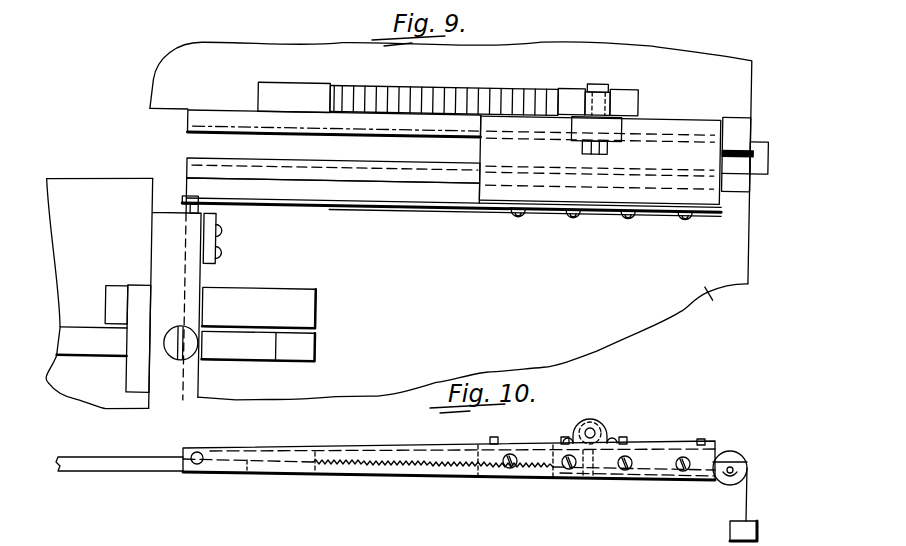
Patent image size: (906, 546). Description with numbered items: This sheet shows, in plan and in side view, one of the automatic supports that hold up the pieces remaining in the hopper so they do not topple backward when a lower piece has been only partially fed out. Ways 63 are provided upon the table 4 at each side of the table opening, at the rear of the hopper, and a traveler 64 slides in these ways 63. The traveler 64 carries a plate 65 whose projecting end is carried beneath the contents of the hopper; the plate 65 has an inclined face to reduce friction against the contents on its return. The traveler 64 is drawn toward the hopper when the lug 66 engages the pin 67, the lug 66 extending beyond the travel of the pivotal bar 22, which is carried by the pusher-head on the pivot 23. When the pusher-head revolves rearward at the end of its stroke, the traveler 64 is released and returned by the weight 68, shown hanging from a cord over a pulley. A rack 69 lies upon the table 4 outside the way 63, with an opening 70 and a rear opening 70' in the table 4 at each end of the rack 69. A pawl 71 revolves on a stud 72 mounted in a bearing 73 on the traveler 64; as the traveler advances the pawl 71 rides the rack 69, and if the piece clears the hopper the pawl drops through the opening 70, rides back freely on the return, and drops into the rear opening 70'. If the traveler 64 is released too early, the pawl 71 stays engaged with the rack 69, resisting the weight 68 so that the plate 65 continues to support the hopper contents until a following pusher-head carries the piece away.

In FIG. 9, the table 4 is at (289, 48).
In FIG. 10, the table 4 is at (128, 452).
In FIG. 9, the pivotal bar 22 is at (155, 248).
In FIG. 9, the pivot 23 is at (173, 359).
In FIG. 9, the ways 63 is at (231, 96).
In FIG. 10, the ways 63 is at (247, 457).
In FIG. 9, the traveler 64 is at (683, 110).
In FIG. 9, the plate 65 is at (183, 197).
In FIG. 10, the plate 65 is at (368, 443).
In FIG. 9, the lug 66 is at (220, 246).
In FIG. 9, the pin 67 is at (205, 208).
In FIG. 10, the pin 67 is at (198, 465).
In FIG. 9, the weight 68 is at (750, 188).
In FIG. 10, the weight 68 is at (729, 531).
In FIG. 9, the rack 69 is at (472, 77).
In FIG. 10, the rack 69 is at (367, 467).
In FIG. 9, the opening 70 is at (296, 83).
In FIG. 10, the opening 70 is at (400, 479).
In FIG. 9, the rear opening 70' is at (639, 89).
In FIG. 10, the rear opening 70' is at (556, 485).
In FIG. 9, the pawl 71 is at (580, 115).
In FIG. 10, the pawl 71 is at (588, 479).
In FIG. 9, the stud 72 is at (598, 84).
In FIG. 10, the stud 72 is at (597, 431).
In FIG. 9, the bearing 73 is at (537, 82).
In FIG. 10, the bearing 73 is at (620, 438).